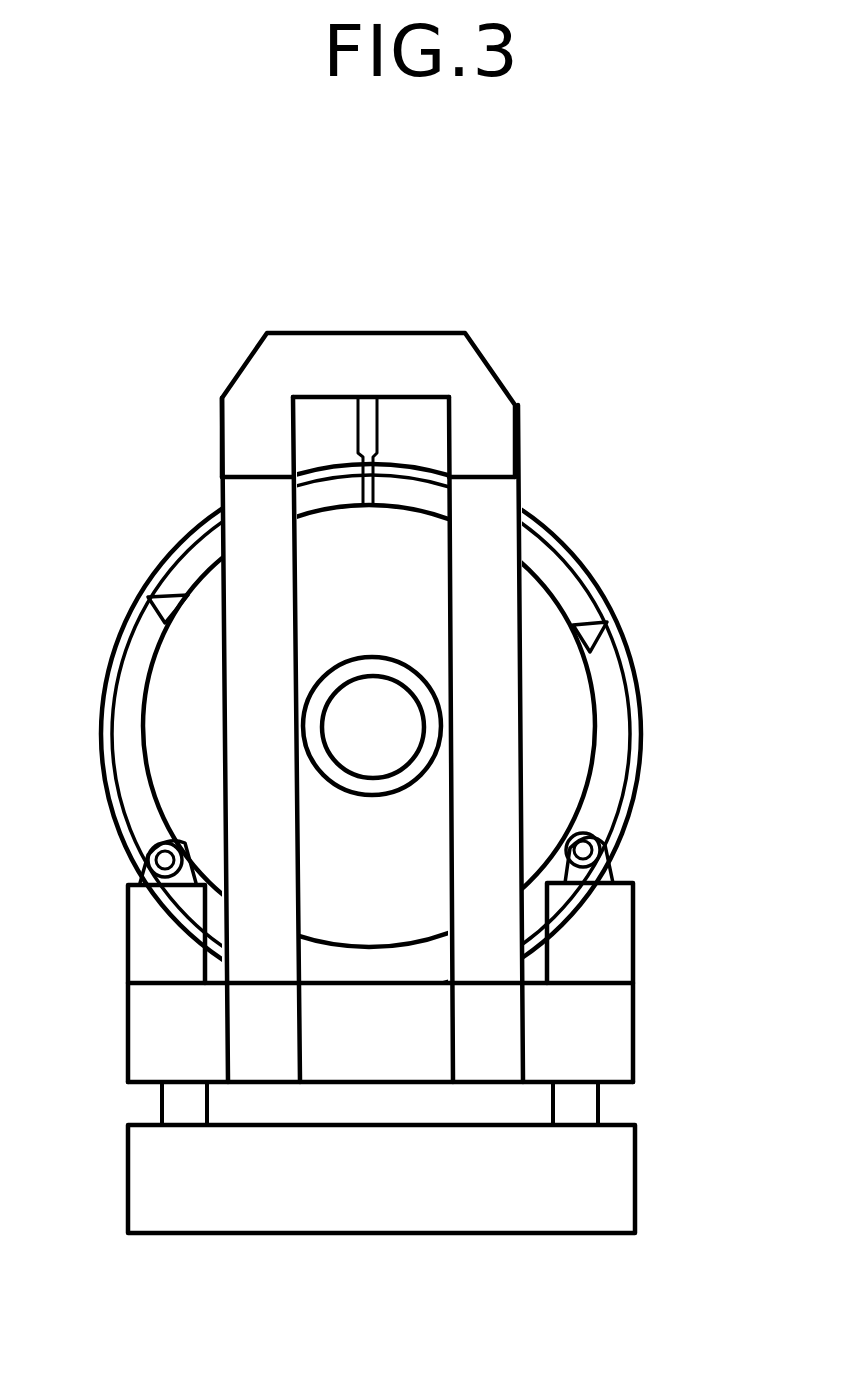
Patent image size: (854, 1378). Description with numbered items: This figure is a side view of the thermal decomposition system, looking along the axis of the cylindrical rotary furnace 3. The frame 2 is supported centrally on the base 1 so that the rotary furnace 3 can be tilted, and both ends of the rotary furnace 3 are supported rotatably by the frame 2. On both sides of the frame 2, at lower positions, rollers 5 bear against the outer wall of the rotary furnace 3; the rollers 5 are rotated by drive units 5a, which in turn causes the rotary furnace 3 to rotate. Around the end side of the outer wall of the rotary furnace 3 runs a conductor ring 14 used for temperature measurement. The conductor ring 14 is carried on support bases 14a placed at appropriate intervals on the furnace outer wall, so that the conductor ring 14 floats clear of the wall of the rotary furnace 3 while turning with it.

The base 1 is at (600, 1190).
The frame 2 is at (466, 378).
The rotary furnace 3 is at (562, 728).
The rollers 5 is at (118, 837).
The drive units 5a is at (145, 945).
The conductor rings for temperature measurement 14 is at (562, 540).
The support bases 14a is at (168, 605).